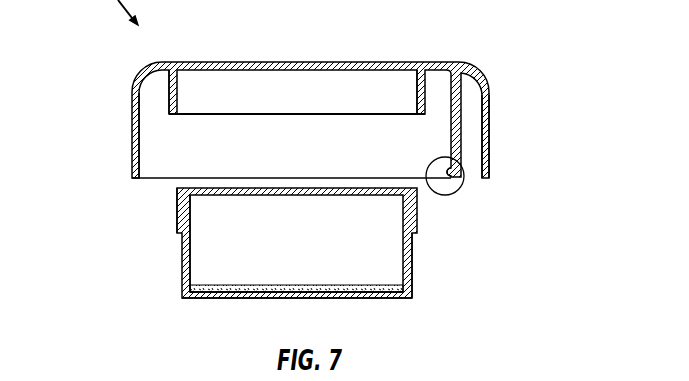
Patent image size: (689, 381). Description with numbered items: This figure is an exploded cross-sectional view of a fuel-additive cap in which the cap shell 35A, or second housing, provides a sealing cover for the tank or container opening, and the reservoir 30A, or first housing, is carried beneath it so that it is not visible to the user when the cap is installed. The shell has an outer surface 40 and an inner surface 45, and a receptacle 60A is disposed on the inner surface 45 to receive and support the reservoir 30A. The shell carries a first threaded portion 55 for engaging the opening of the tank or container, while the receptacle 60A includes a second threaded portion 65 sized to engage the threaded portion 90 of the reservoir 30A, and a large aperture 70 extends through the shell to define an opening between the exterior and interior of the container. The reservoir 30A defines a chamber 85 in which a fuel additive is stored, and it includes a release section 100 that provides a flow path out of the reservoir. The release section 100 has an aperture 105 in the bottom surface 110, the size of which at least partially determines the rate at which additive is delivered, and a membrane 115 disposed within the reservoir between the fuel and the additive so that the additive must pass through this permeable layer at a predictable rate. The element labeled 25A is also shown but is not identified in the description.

The lid 25A is at (472, 64).
The reservoir 30A is at (412, 288).
The cap shell 35A is at (490, 146).
The outer surface 40 is at (490, 102).
The inner surface 45 is at (449, 182).
The first threaded portion 55 is at (454, 192).
The receptacle 60A is at (169, 105).
The second threaded portion 65 is at (416, 78).
The aperture 70 is at (169, 112).
The chamber 85 is at (392, 260).
The threaded portion 90 is at (178, 225).
The release section 100 is at (204, 271).
The aperture 105 is at (294, 299).
The bottom surface 110 is at (201, 297).
The membrane 115 is at (271, 283).